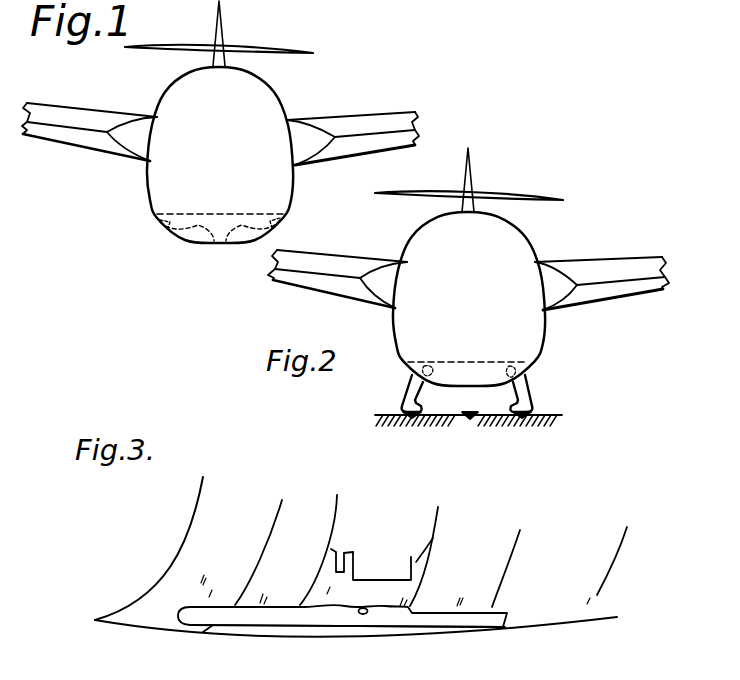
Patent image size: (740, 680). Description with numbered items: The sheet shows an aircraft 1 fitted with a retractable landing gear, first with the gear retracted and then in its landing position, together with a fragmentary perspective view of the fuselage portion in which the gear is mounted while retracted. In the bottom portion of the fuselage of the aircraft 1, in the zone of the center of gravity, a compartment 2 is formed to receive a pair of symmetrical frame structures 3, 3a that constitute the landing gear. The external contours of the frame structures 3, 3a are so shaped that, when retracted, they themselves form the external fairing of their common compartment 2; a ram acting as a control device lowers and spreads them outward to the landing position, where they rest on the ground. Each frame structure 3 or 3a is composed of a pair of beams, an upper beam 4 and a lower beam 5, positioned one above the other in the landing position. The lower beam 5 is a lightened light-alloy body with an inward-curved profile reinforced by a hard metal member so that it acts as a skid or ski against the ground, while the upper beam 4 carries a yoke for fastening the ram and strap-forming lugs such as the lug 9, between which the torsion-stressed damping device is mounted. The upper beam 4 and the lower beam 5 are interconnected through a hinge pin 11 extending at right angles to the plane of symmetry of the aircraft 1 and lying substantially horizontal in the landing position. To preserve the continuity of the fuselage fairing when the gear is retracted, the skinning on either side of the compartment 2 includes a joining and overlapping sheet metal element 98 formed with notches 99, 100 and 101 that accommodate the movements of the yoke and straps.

In FIG. 1, the aircraft 1 is at (245, 84).
In FIG. 2, the aircraft 1 is at (500, 244).
In FIG. 3, the aircraft 1 is at (583, 615).
In FIG. 1, the compartment 2 is at (282, 216).
In FIG. 2, the compartment 2 is at (532, 368).
In FIG. 1, the frame structure 3 is at (247, 240).
In FIG. 2, the frame structure 3 is at (526, 398).
In FIG. 1, the frame structure 3a is at (181, 232).
In FIG. 2, the frame structure 3a is at (423, 399).
In FIG. 3, the upper beam 4 is at (410, 597).
In FIG. 3, the lower beam 5 is at (503, 607).
In FIG. 3, the strap-forming lug 9 is at (412, 572).
In FIG. 3, the hinge pin 11 is at (363, 615).
In FIG. 3, the joining and overlapping sheet metal element 98 is at (382, 567).
In FIG. 3, the notch 99 is at (333, 549).
In FIG. 3, the notch 100 is at (348, 552).
In FIG. 3, the notch 101 is at (437, 538).